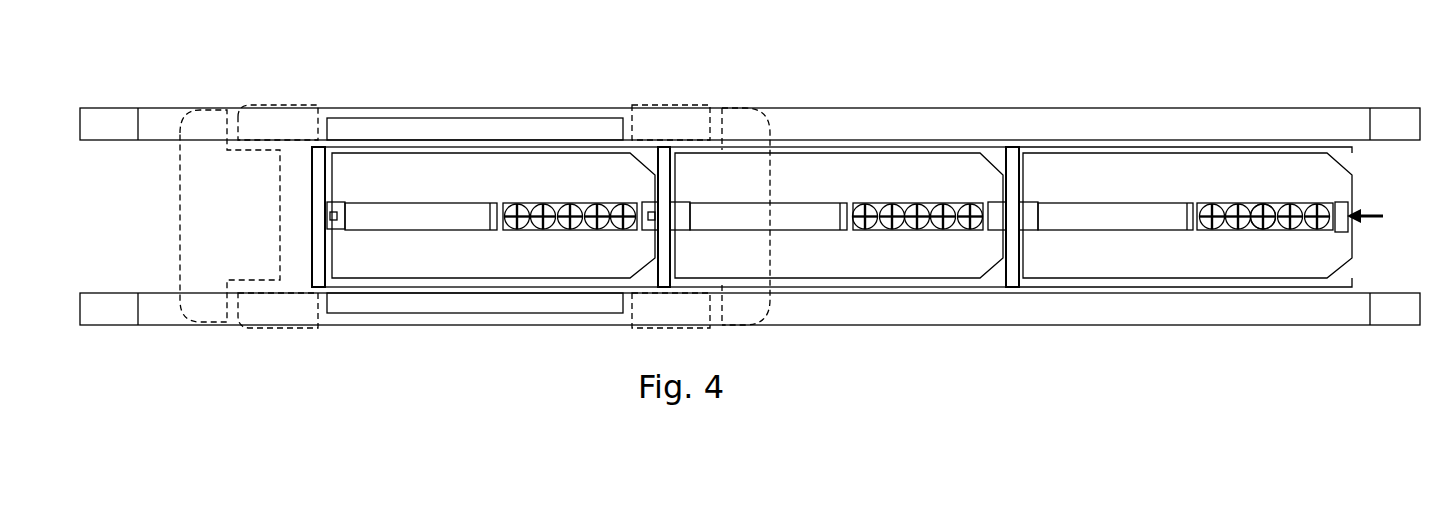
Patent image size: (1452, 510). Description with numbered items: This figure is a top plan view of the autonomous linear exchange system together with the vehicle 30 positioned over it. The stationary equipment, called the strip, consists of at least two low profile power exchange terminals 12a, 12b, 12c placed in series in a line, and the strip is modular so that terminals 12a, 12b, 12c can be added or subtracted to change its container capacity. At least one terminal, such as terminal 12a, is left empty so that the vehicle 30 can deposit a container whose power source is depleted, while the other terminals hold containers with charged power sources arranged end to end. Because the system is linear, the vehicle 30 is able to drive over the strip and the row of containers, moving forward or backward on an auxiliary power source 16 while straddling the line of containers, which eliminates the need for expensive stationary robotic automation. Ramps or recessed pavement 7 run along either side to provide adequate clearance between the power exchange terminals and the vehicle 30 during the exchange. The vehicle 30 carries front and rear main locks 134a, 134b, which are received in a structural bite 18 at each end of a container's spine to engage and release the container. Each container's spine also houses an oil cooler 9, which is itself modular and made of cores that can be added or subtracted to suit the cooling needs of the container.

The ramps or recessed pavement 7 is at (750, 216).
The auxiliary power source 16 is at (475, 215).
The vehicle 30 is at (249, 216).
The power exchange terminal 12a is at (491, 217).
The power exchange terminal 12b is at (838, 217).
The power exchange terminal 12c is at (1185, 217).
The front main lock 134a is at (652, 203).
The rear main lock 134b is at (332, 203).
The oil cooler 9 is at (1264, 207).
The structural bite 18 is at (1380, 217).